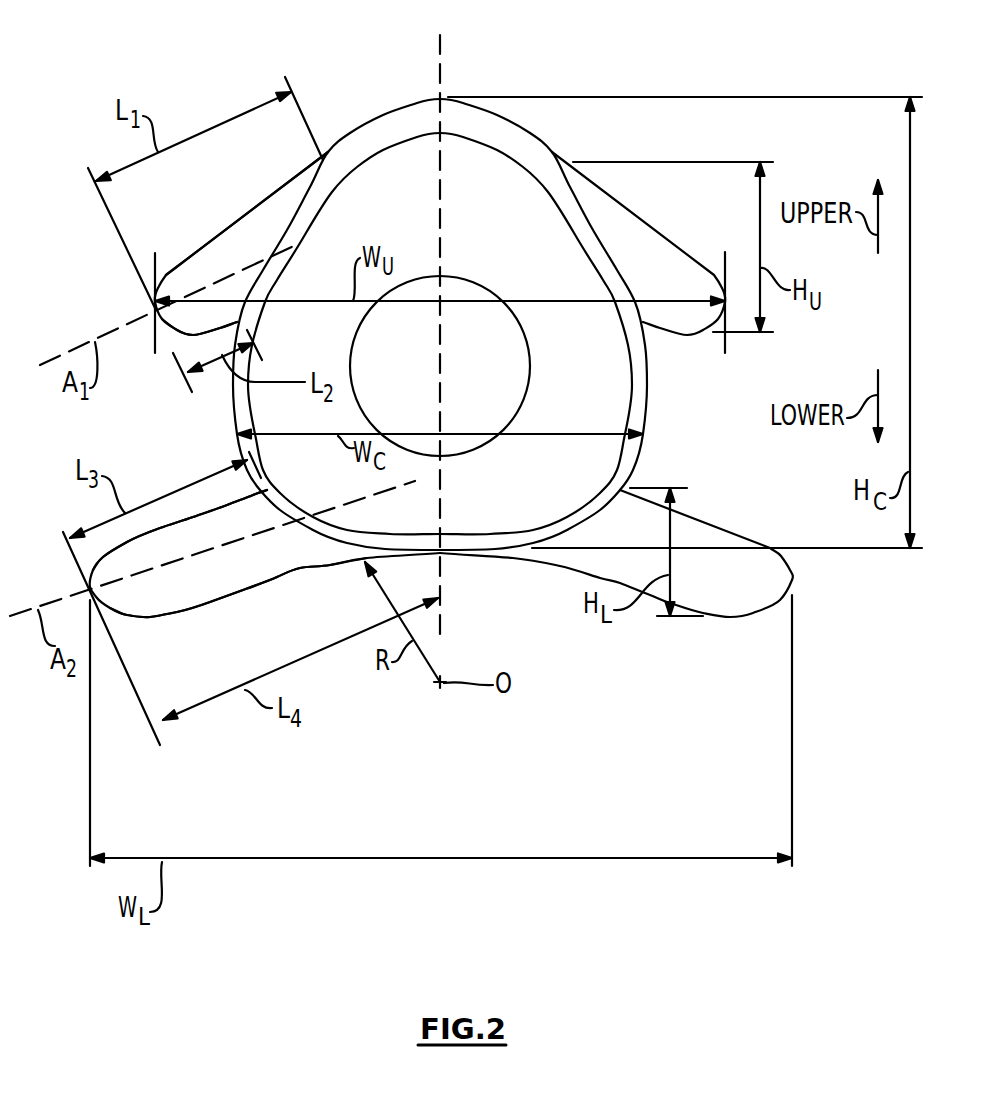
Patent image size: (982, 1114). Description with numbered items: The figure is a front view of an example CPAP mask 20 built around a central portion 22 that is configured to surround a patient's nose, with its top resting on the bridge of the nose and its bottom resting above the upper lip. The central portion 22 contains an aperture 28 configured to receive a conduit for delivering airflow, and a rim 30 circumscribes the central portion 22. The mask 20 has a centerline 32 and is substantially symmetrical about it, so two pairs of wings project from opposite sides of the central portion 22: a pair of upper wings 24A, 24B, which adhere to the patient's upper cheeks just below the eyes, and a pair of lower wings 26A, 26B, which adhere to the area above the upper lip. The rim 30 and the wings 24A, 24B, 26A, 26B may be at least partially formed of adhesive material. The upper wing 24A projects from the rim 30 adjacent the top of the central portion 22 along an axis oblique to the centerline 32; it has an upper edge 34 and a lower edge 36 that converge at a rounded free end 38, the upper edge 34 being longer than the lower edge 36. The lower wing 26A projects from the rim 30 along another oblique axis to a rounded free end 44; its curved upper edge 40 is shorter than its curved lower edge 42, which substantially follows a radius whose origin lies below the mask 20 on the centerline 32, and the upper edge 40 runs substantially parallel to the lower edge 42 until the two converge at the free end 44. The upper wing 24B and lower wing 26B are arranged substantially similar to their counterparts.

The mask 20 is at (661, 144).
The central portion 22 is at (500, 218).
The upper wing 24A is at (202, 265).
The upper wing 24B is at (660, 257).
The lower wing 26A is at (167, 578).
The lower wing 26B is at (708, 532).
The aperture 28 is at (457, 371).
The rim 30 is at (363, 142).
The centerline 32 is at (440, 44).
The upper edge 34 is at (243, 207).
The lower edge 36 is at (218, 334).
The rounded free end 38 is at (150, 310).
The upper edge 40 is at (190, 510).
The lower edge 42 is at (253, 585).
The rounded free end 44 is at (88, 587).